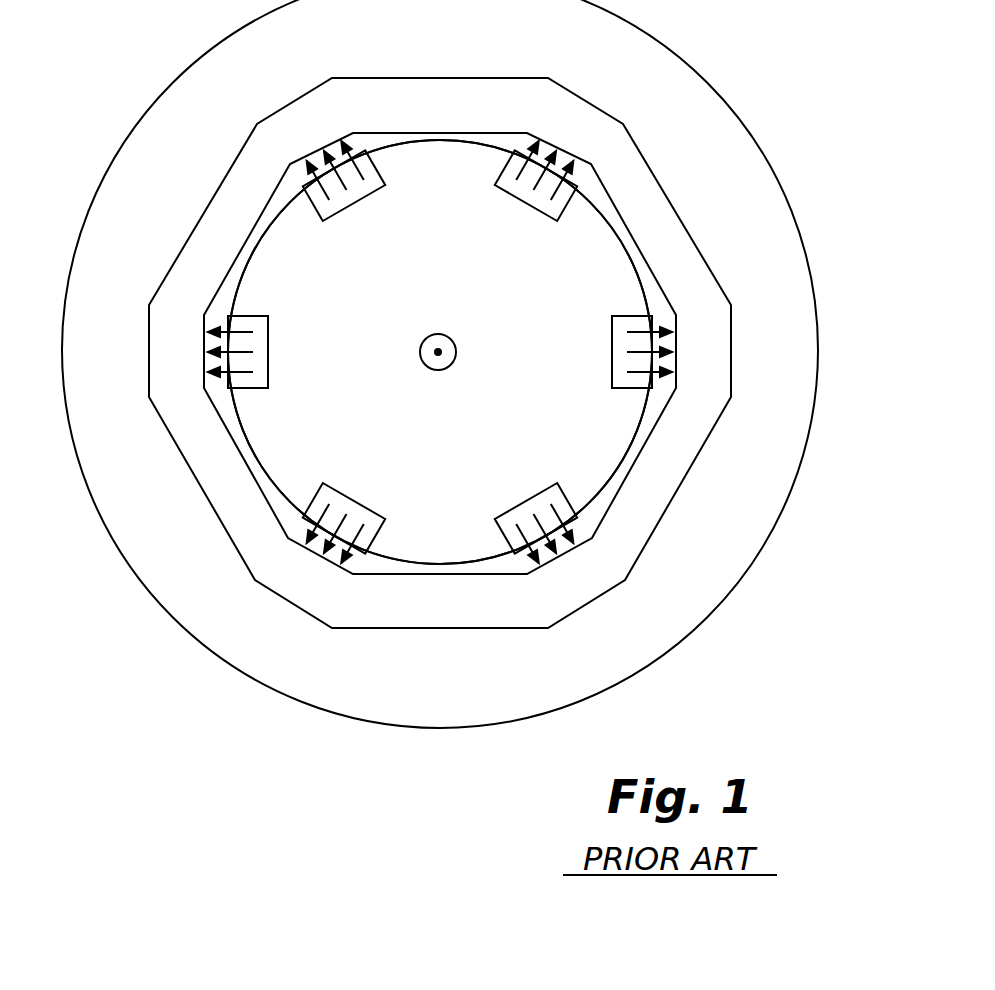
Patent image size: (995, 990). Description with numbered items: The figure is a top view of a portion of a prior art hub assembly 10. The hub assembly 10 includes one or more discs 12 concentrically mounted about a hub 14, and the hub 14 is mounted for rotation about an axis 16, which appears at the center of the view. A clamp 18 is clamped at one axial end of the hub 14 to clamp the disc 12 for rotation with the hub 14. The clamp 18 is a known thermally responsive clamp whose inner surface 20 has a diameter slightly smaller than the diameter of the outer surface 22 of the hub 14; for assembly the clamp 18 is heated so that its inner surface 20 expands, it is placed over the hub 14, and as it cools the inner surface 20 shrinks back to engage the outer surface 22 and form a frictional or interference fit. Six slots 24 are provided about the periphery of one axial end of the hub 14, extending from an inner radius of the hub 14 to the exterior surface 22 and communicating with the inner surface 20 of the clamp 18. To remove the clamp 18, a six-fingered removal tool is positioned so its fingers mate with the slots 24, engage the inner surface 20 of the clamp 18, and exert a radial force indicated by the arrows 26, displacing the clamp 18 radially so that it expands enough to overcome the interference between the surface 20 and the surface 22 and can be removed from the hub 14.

The hub assembly 10 is at (88, 112).
The disc 12 is at (760, 148).
The hub 14 is at (435, 427).
The axis 16 is at (441, 352).
The clamp 18 is at (731, 355).
The inner surface 20 is at (658, 410).
The outer surface 22 is at (595, 502).
The slots 24 is at (357, 203).
The arrows 26 is at (312, 190).